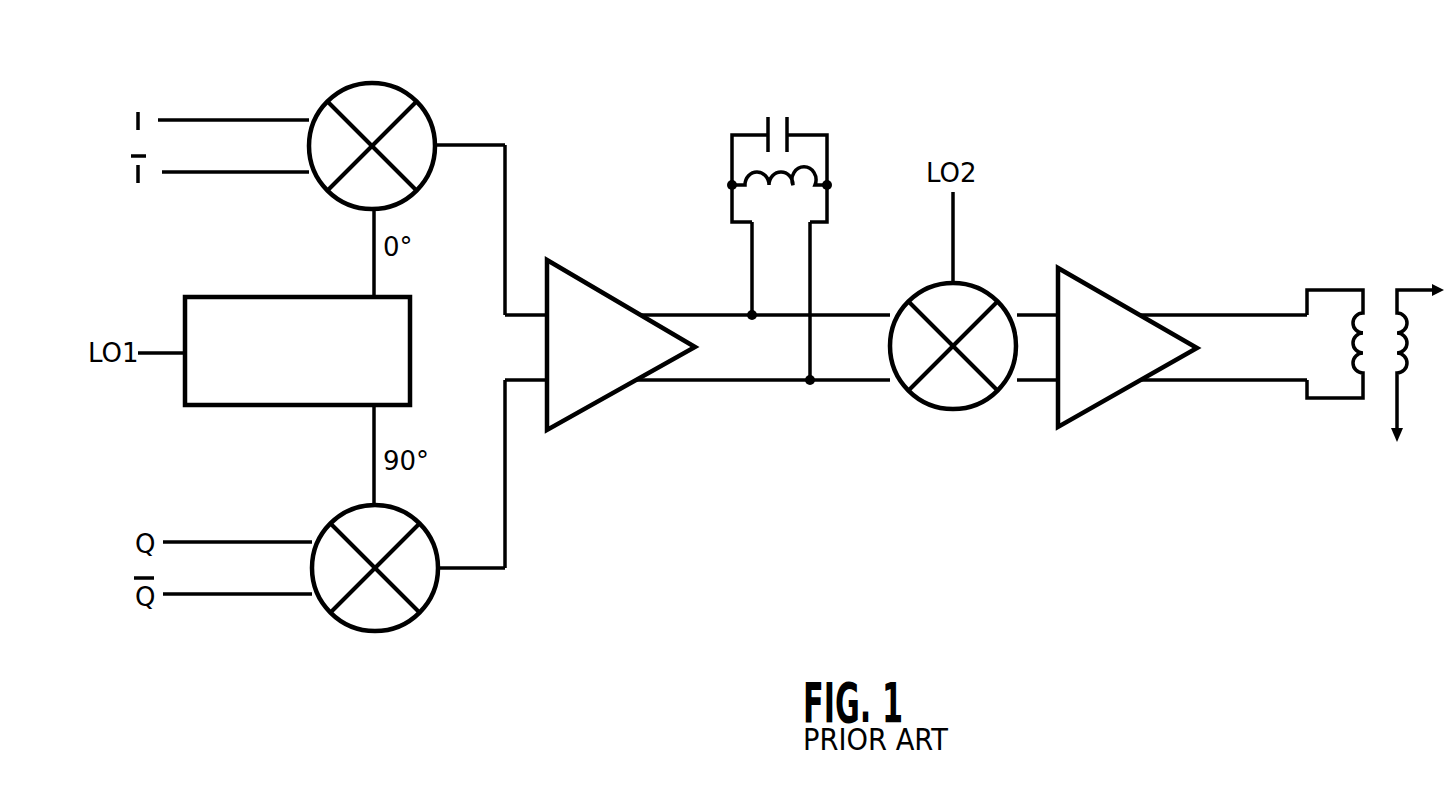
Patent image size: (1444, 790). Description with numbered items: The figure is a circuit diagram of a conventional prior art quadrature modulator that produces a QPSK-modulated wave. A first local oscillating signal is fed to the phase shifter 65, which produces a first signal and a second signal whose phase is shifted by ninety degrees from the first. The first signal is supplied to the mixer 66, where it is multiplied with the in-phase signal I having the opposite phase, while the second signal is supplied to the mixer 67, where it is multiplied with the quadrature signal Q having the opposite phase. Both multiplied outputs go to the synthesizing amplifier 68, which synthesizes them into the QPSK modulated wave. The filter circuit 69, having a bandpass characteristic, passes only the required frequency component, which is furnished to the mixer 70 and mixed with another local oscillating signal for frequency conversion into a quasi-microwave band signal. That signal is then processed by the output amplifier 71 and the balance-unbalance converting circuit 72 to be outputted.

The phase shifter 65 is at (222, 297).
The mixer 66 is at (407, 93).
The mixer 67 is at (432, 609).
The synthesizing amplifier 68 is at (600, 292).
The filter circuit 69 is at (802, 102).
The mixer 70 is at (914, 396).
The output amplifier 71 is at (1128, 308).
The balance-unbalance converting circuit 72 is at (1367, 255).